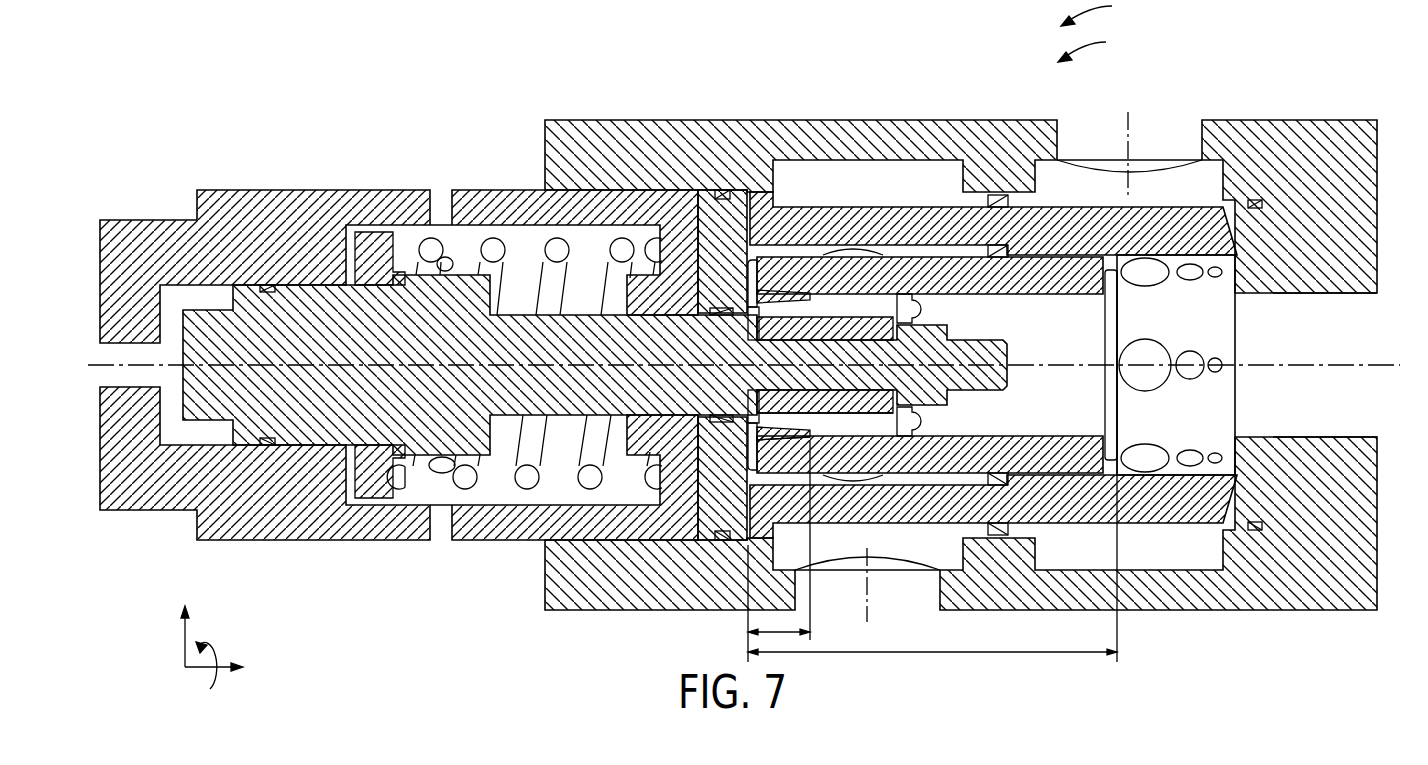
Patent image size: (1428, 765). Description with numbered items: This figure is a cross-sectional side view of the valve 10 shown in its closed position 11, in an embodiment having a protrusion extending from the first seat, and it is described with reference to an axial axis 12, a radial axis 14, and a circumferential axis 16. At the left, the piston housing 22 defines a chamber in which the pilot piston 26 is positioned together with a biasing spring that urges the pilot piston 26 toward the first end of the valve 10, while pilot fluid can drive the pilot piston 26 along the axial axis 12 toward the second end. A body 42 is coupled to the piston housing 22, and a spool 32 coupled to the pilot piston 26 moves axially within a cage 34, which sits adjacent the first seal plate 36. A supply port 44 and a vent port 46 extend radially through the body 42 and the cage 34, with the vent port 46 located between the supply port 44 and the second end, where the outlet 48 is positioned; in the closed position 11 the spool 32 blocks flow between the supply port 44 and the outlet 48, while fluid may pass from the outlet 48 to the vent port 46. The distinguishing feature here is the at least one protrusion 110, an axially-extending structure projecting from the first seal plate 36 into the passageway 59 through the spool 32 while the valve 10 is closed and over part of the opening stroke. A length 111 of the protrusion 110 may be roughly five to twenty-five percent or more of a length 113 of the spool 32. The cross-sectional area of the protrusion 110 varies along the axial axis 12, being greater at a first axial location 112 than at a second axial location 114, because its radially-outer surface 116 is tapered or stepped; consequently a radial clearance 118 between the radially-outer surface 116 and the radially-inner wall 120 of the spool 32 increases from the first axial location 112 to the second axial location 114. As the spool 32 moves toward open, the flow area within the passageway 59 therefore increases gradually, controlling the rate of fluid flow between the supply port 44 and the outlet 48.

The valve 10 is at (1096, 45).
The closed position 11 is at (1100, 13).
The axial axis 12 is at (200, 668).
The radial axis 14 is at (182, 648).
The circumferential axis 16 is at (223, 645).
The piston housing 22 is at (366, 212).
The pilot piston 26 is at (570, 403).
The spool 32 is at (948, 277).
The cage 34 is at (863, 217).
The first seal plate 36 is at (718, 222).
The body 42 is at (1003, 135).
The supply port 44 is at (867, 482).
The vent port 46 is at (1148, 270).
The outlet 48 is at (1362, 327).
The passageway 59 is at (1072, 342).
The protrusion 110 is at (810, 298).
The length of the protrusion 111 is at (780, 632).
The first axial location 112 is at (762, 293).
The length of the spool 113 is at (932, 652).
The second axial location 114 is at (796, 296).
The radially-outer surface 116 is at (776, 452).
The radial clearance 118 is at (770, 445).
The radially-inner wall 120 is at (818, 450).